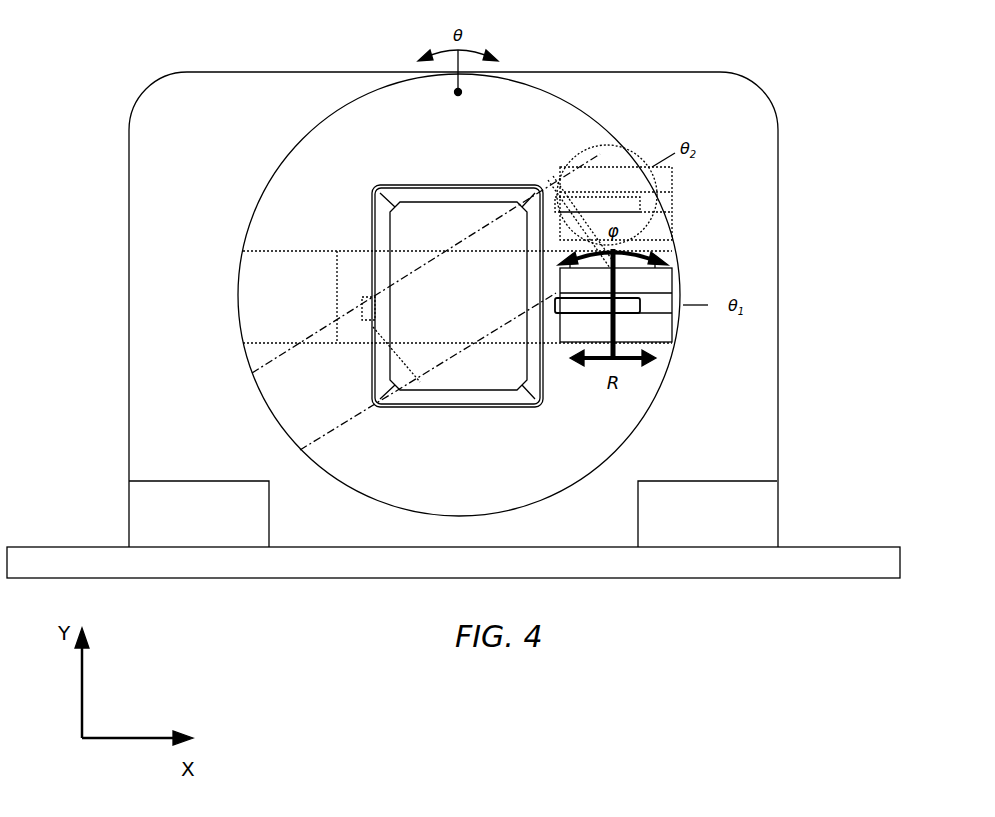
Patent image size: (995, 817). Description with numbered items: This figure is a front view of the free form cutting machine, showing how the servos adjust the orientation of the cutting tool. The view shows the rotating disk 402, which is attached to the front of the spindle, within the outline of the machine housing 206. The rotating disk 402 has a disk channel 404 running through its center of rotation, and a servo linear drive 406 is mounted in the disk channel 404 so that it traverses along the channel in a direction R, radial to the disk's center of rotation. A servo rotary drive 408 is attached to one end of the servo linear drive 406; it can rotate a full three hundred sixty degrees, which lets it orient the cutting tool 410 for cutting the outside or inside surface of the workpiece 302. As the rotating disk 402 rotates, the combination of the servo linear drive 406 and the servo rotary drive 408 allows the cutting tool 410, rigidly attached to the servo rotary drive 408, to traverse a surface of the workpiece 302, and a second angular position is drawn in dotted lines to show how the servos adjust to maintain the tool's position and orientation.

The housing 206 is at (180, 97).
The workpiece 302 is at (440, 305).
The rotating disk 402 is at (262, 312).
The disk channel 404 is at (265, 343).
The servo linear drive 406 is at (352, 271).
The servo rotary drive 408 is at (655, 325).
The cutting tool 410 is at (632, 307).